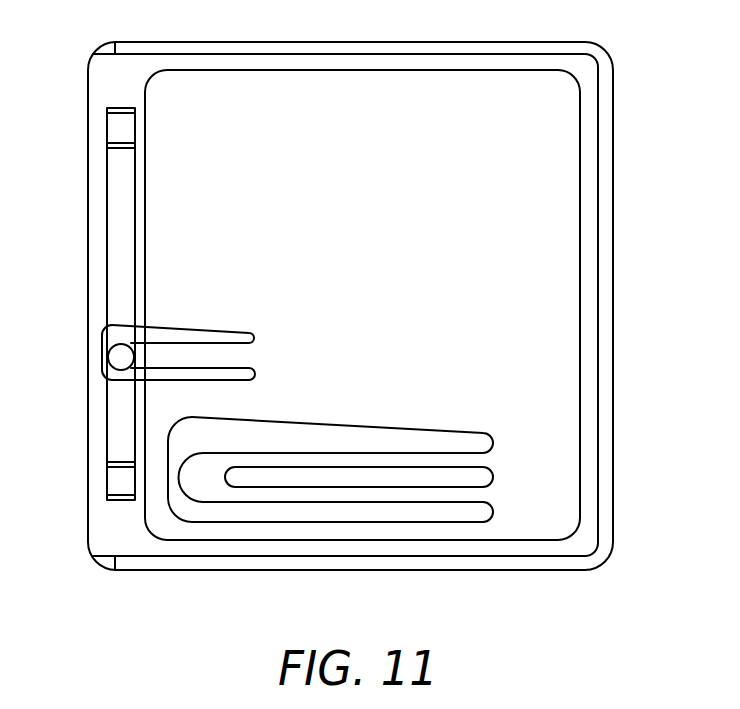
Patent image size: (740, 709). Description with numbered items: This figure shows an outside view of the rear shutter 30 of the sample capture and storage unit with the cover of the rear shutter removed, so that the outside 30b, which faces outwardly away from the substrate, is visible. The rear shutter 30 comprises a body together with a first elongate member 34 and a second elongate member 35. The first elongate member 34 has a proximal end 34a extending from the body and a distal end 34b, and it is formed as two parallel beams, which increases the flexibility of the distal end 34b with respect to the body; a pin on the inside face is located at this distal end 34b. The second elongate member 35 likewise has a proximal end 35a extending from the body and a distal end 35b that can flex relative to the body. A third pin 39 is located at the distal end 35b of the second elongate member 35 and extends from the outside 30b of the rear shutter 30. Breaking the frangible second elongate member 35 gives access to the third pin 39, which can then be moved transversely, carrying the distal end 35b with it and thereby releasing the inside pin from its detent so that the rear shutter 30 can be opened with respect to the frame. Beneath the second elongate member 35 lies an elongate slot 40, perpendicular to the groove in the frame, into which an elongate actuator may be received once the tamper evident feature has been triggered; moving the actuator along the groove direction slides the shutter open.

The rear shutter 30 is at (613, 114).
The outside of the rear shutter 30b is at (565, 237).
The first elongate member 34 is at (337, 495).
The proximal end of the first elongate member 34a is at (482, 495).
The distal end of the first elongate member 34b is at (210, 487).
The second elongate member 35 is at (173, 358).
The proximal end of the second elongate member 35a is at (248, 357).
The distal end of the second elongate member 35b is at (145, 353).
The third pin 39 is at (117, 357).
The elongate slot 40 is at (118, 170).